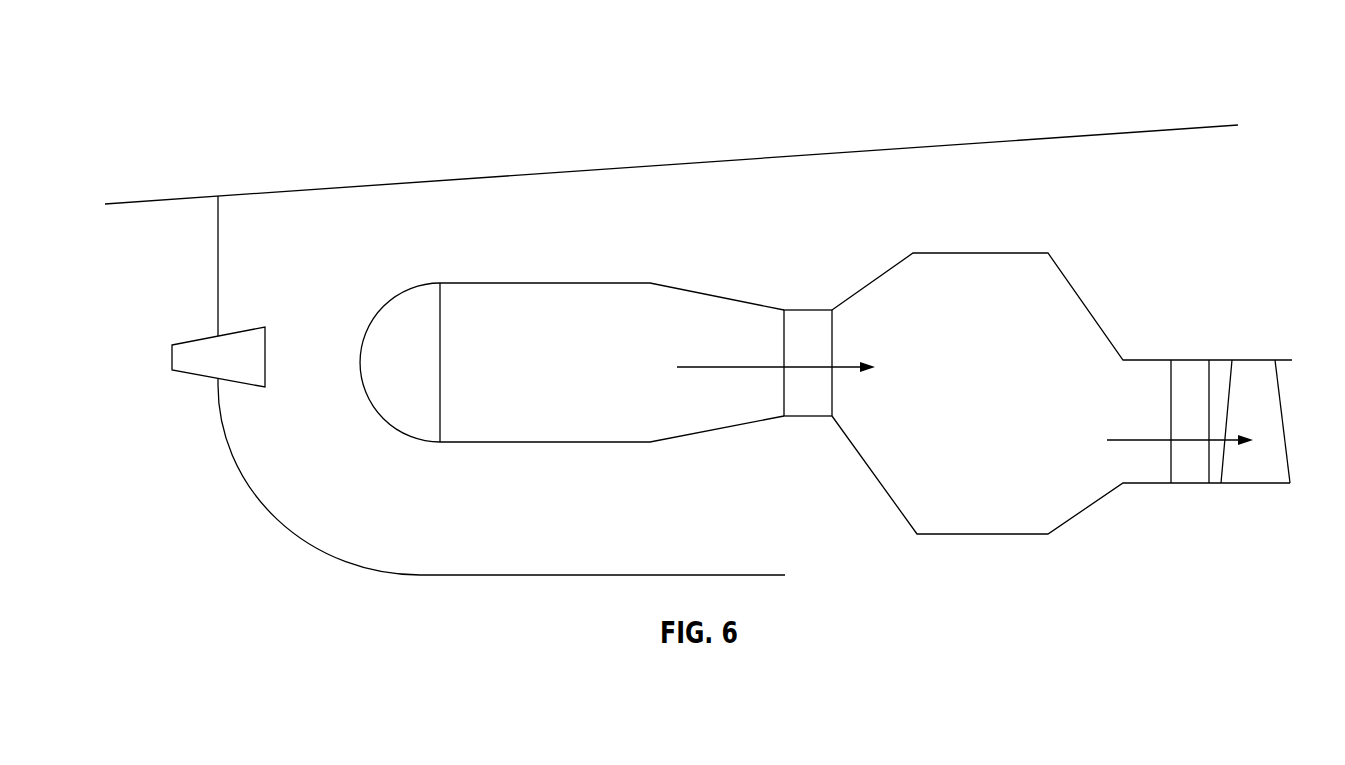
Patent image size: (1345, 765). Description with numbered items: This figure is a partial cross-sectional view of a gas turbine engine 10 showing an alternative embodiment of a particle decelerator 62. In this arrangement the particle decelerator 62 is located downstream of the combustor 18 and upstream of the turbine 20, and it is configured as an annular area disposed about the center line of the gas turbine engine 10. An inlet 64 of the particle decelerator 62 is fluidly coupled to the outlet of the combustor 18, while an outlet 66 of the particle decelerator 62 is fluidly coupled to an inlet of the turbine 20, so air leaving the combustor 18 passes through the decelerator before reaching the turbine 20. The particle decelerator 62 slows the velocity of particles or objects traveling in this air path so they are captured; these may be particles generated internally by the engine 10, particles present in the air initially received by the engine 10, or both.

The gas turbine engine 10 is at (1170, 57).
The combustor 18 is at (487, 283).
The inlet 64 is at (840, 322).
The particle decelerator 62 is at (1100, 296).
The outlet 66 is at (1110, 360).
The turbine 20 is at (1212, 484).